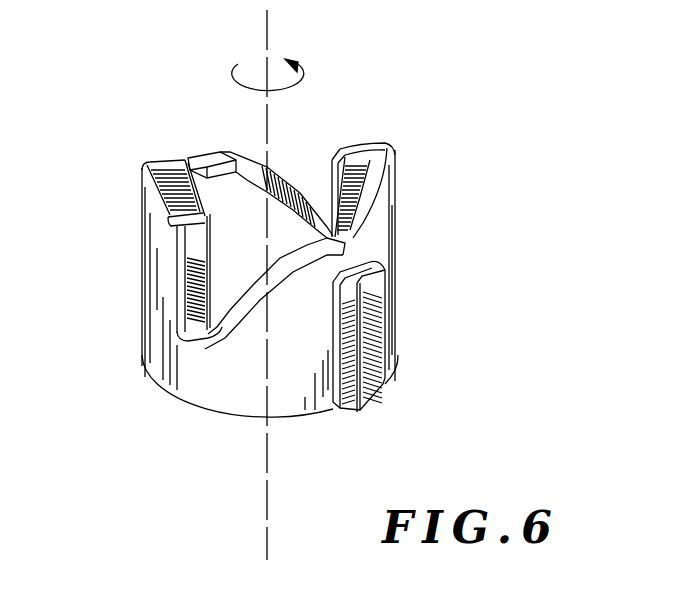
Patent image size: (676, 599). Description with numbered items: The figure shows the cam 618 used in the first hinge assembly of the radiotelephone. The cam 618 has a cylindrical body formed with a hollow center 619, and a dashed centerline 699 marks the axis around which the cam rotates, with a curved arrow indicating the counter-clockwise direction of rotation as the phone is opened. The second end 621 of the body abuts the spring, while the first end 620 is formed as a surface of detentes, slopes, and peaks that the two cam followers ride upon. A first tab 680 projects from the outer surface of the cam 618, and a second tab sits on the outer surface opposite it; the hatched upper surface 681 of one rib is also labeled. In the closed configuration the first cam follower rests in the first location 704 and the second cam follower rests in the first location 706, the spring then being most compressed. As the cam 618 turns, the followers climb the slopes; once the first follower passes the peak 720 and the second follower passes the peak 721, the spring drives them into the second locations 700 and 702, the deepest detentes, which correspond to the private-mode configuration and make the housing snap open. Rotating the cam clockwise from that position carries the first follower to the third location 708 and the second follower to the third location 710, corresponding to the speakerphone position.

The cam 618 is at (512, 30).
The axis of rotation 699 is at (268, 14).
The first end 620 is at (402, 199).
The second end 621 is at (200, 410).
The peak 720 is at (163, 163).
The first rib upper surface 681 is at (162, 165).
The first location 704 is at (182, 210).
The hollow center 619 is at (210, 257).
The second location 702 is at (197, 328).
The third location 708 is at (196, 162).
The second location 700 is at (314, 215).
The third location 710 is at (330, 238).
The first location 706 is at (360, 150).
The peak 721 is at (375, 160).
The first tab 680 is at (377, 395).